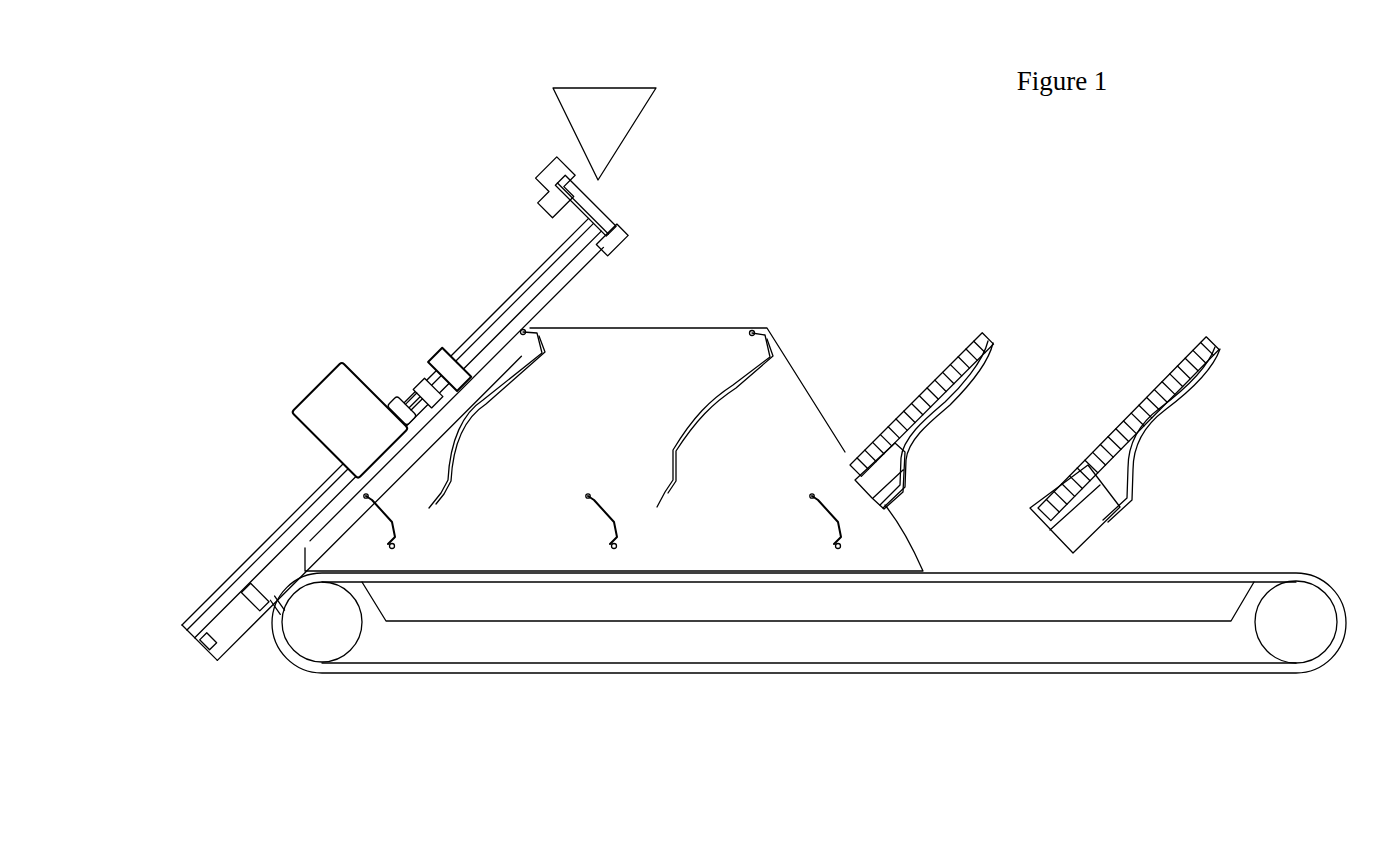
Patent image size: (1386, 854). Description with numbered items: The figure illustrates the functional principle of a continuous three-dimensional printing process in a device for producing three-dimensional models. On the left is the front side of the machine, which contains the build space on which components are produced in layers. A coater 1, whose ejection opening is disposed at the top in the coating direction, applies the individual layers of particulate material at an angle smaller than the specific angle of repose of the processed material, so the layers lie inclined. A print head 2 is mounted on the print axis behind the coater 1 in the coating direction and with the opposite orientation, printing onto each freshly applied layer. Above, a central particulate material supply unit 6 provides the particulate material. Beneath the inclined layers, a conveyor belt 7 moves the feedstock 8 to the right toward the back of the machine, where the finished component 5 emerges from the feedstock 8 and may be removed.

The coater 1 is at (432, 352).
The print head 2 is at (375, 420).
The finished component 5 is at (765, 345).
The central particulate material supply unit 6 is at (598, 135).
The conveyor belt 7 is at (1155, 583).
The feedstock 8 is at (716, 498).